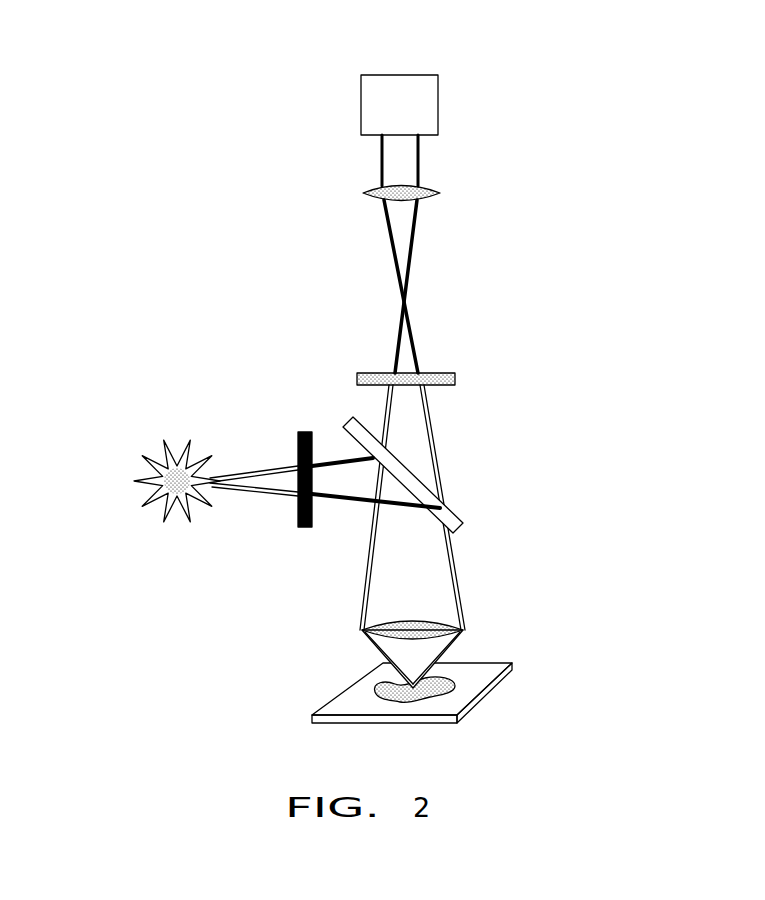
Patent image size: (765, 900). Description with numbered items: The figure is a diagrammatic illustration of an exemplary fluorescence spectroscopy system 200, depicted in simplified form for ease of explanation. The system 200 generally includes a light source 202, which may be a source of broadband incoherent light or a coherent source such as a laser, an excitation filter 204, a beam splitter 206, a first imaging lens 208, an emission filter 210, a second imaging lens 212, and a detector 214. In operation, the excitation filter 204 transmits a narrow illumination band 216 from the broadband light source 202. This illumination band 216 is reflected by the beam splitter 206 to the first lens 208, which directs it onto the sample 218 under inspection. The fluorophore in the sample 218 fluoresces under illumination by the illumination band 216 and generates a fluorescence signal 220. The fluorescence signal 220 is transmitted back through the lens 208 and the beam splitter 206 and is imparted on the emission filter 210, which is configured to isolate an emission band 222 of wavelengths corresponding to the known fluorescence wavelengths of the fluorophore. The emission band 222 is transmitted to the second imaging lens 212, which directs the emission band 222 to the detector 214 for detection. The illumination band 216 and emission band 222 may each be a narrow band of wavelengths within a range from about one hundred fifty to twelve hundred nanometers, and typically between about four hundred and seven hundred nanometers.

The fluorescence spectroscopy system 200 is at (543, 200).
The light source 202 is at (156, 462).
The excitation filter 204 is at (300, 432).
The beam splitter 206 is at (350, 430).
The first imaging lens 208 is at (443, 630).
The emission filter 210 is at (357, 379).
The second imaging lens 212 is at (363, 193).
The detector 214 is at (361, 88).
The illumination band 216 is at (338, 506).
The sample 218 is at (450, 687).
The fluorescence signal 220 is at (452, 480).
The emission band 222 is at (419, 162).